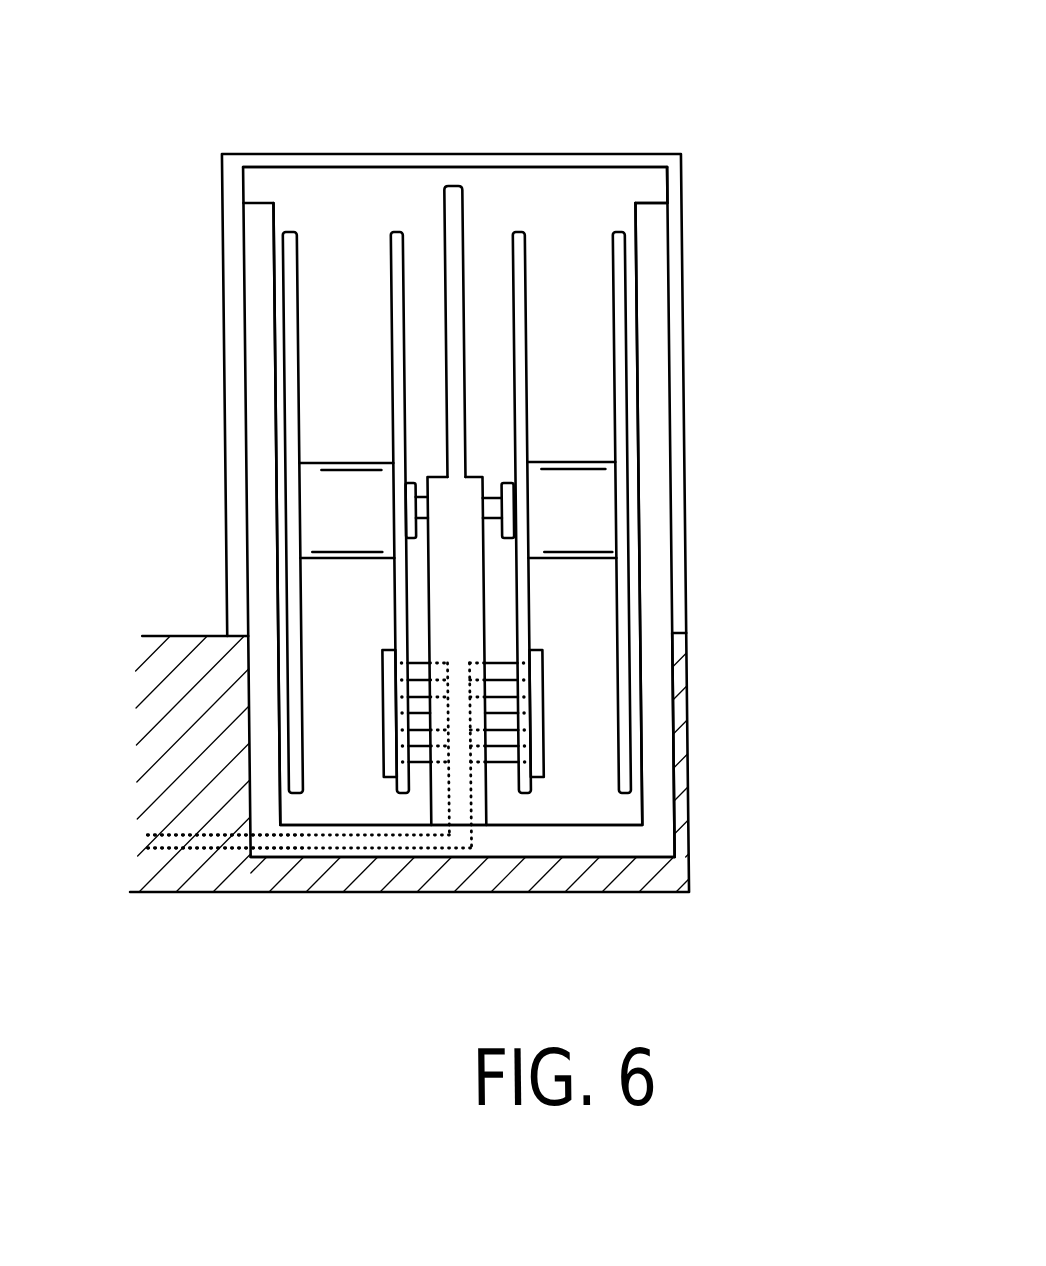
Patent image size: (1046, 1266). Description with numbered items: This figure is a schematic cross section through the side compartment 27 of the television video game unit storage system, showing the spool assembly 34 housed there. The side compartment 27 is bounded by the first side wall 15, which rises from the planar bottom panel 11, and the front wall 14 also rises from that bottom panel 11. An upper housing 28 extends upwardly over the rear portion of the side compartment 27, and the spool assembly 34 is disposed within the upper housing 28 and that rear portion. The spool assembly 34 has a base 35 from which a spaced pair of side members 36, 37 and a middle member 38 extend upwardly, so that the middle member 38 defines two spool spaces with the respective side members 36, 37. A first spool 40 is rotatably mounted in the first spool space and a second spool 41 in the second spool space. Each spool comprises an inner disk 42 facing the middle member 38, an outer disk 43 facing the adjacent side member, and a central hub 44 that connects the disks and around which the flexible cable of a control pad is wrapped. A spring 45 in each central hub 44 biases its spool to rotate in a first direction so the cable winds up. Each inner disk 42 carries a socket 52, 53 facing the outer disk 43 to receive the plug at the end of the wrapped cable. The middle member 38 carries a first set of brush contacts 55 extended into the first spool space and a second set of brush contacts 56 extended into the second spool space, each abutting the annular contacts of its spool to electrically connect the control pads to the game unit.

The bottom panel 11 is at (232, 892).
The front wall 14 is at (185, 636).
The first side wall 15 is at (683, 813).
The side compartment 27 is at (725, 630).
The upper housing 28 is at (203, 140).
The spool assembly 34 is at (592, 187).
The base 35 is at (505, 850).
The side member 36 is at (650, 203).
The side member 37 is at (243, 203).
The middle member 38 is at (479, 553).
The first spool 40 is at (582, 242).
The second spool 41 is at (381, 216).
The inner disk 42 is at (390, 283).
The outer disk 43 is at (296, 253).
The central hub 44 is at (342, 462).
The spring 45 is at (407, 483).
The socket 52 is at (539, 739).
The socket 53 is at (377, 745).
The first set of brush contacts 55 is at (502, 660).
The second set of brush contacts 56 is at (413, 660).